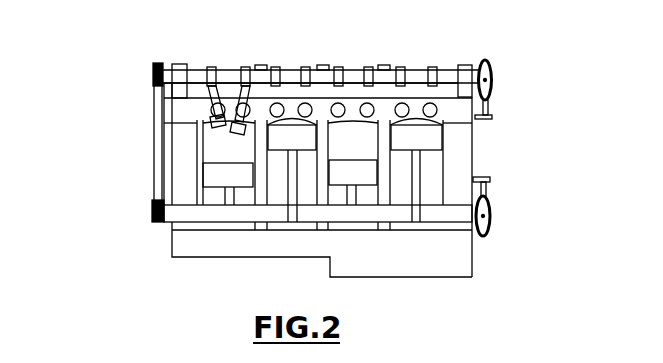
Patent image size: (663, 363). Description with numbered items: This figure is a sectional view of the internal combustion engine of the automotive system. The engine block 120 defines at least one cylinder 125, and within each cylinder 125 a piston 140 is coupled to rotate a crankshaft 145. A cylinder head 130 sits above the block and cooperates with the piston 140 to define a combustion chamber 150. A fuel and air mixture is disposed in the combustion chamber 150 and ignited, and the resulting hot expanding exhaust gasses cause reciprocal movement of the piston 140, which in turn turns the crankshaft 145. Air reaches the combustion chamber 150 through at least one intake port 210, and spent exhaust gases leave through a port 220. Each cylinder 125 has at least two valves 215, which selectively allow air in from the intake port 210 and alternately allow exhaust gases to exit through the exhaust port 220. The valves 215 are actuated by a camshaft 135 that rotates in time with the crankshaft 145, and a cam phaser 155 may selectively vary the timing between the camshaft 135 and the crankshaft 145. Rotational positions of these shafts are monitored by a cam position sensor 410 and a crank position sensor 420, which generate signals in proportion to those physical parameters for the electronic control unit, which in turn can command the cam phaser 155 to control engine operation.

The engine block 120 is at (172, 163).
The cylinder 125 is at (331, 152).
The cylinder head 130 is at (172, 122).
The camshaft 135 is at (223, 67).
The piston 140 is at (357, 173).
The crankshaft 145 is at (198, 213).
The combustion chamber 150 is at (418, 122).
The cam phaser 155 is at (153, 78).
The intake port 210 is at (345, 105).
The valves 215 is at (231, 127).
The exhaust port 220 is at (297, 100).
The cam position sensor 410 is at (493, 115).
The crank position sensor 420 is at (492, 182).